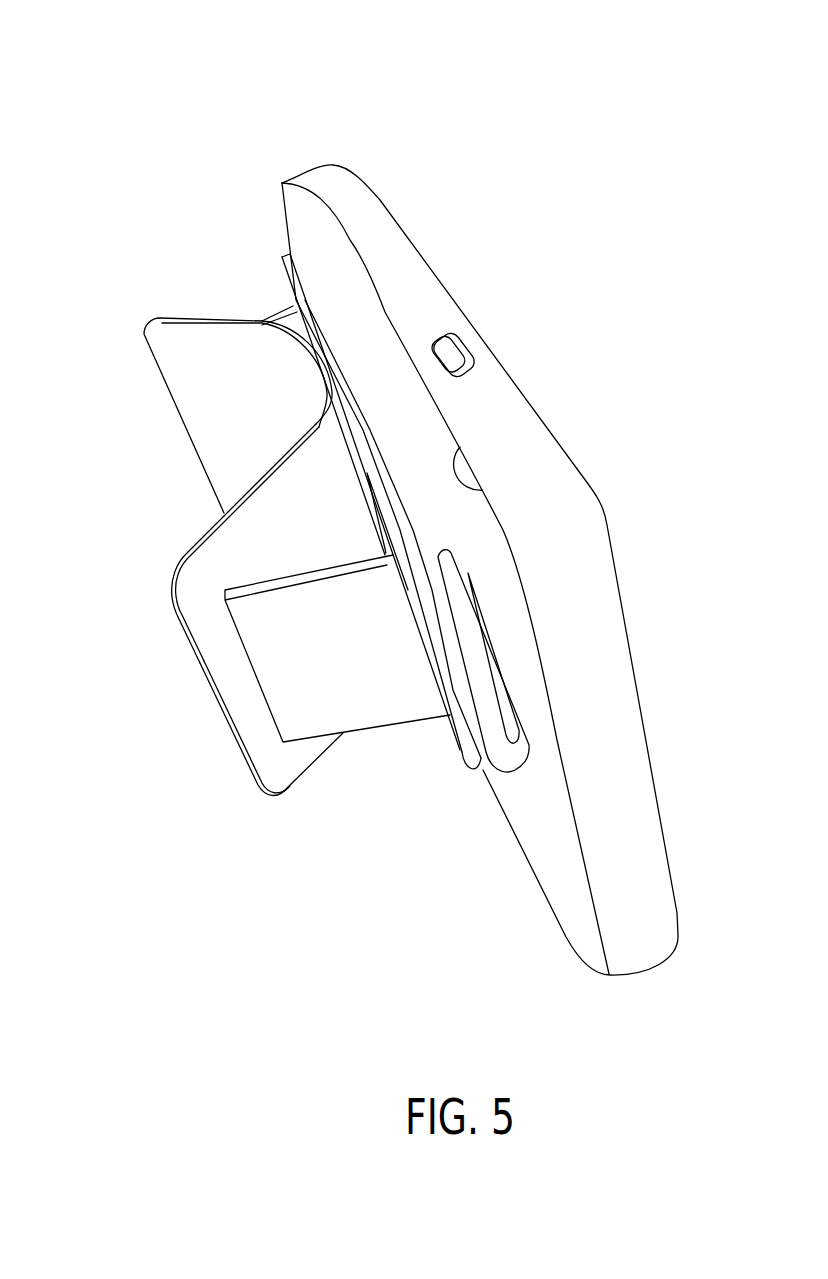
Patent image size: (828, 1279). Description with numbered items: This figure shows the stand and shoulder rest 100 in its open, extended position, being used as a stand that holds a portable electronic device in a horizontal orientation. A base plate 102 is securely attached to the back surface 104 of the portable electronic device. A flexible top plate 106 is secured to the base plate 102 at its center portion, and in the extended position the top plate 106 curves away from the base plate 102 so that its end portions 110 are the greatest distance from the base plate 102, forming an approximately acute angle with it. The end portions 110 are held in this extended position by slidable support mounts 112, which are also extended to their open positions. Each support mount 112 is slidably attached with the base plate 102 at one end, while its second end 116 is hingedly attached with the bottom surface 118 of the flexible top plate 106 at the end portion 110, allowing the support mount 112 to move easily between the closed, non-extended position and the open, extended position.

The stand and shoulder rest 100 is at (344, 88).
The base plate 102 is at (297, 303).
The back surface 104 is at (286, 199).
The flexible top plate 106 is at (297, 428).
The end portions 110 is at (173, 378).
The slidable support mount 112 is at (357, 707).
The second end 116 is at (265, 702).
The bottom surface 118 is at (220, 663).